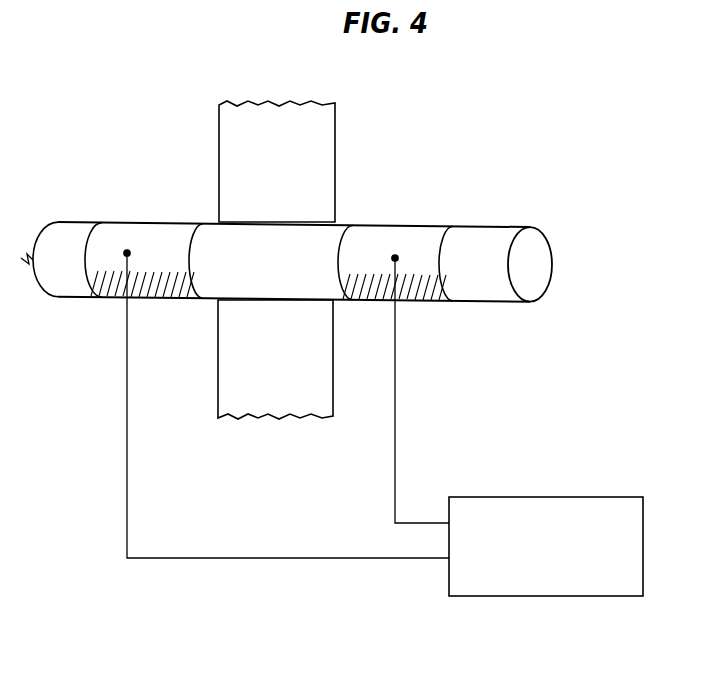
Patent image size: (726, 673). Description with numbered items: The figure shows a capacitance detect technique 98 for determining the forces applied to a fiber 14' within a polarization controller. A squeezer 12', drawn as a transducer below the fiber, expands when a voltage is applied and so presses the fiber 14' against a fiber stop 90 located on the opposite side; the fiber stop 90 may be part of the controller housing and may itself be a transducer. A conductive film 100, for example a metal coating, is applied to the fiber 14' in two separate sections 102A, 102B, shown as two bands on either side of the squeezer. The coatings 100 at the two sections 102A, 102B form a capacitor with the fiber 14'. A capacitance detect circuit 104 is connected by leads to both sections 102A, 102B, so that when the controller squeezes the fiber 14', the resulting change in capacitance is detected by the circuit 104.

The capacitance detect technique 98 is at (481, 114).
The fiber 14' is at (317, 271).
The conductive film 100 is at (163, 233).
The first section 102A is at (137, 204).
The second section 102B is at (428, 312).
The fiber stop 90 is at (328, 127).
The squeezer 12' is at (275, 388).
The capacitance detect circuit 104 is at (532, 583).